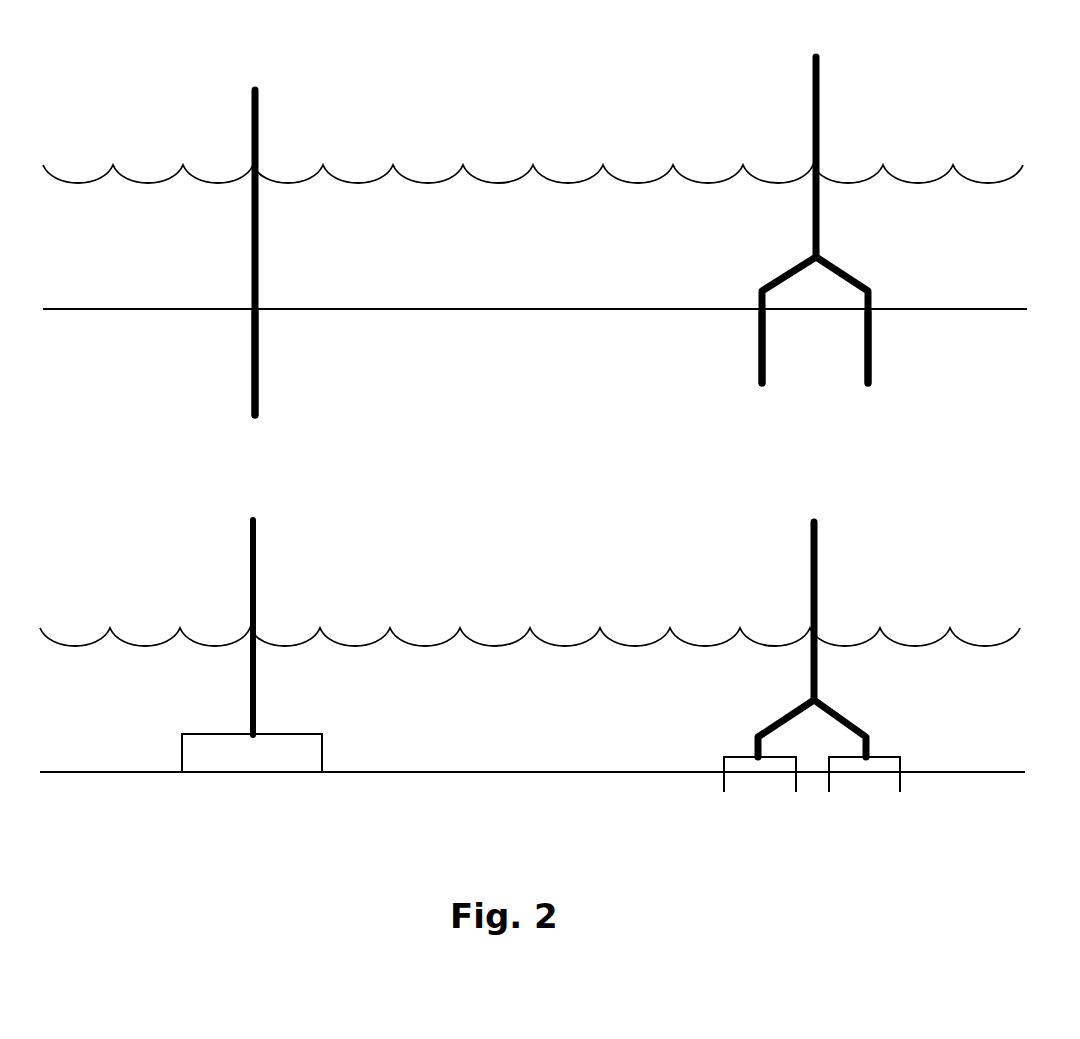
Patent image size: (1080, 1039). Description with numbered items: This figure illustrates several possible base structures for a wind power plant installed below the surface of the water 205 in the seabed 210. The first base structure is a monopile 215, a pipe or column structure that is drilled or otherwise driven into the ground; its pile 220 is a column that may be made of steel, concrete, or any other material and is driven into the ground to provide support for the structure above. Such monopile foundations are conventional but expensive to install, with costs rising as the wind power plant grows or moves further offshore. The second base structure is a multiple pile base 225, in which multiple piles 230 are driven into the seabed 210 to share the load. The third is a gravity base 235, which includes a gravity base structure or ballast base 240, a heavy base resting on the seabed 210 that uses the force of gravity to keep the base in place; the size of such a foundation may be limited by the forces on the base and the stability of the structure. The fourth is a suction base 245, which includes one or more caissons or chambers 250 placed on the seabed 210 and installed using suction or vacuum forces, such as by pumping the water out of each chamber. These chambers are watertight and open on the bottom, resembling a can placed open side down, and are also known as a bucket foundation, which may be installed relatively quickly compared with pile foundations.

The water 205 is at (953, 168).
The seabed 210 is at (955, 309).
The monopile 215 is at (180, 90).
The pile 220 is at (250, 342).
The multiple pile base 225 is at (745, 95).
The multiple piles 230 is at (868, 363).
The gravity base 235 is at (180, 520).
The gravity base structure or ballast base 240 is at (250, 772).
The suction base 245 is at (742, 522).
The caissons or chambers 250 is at (872, 790).